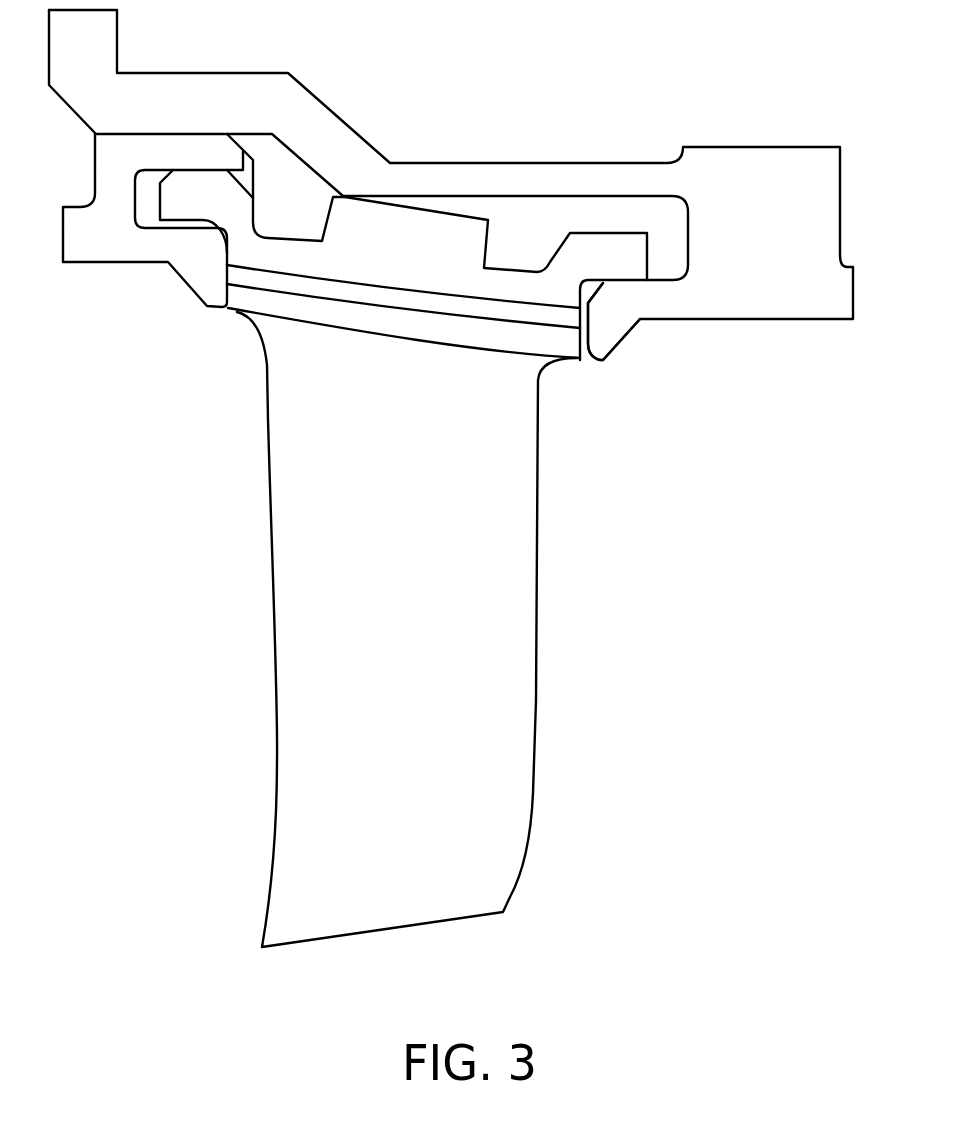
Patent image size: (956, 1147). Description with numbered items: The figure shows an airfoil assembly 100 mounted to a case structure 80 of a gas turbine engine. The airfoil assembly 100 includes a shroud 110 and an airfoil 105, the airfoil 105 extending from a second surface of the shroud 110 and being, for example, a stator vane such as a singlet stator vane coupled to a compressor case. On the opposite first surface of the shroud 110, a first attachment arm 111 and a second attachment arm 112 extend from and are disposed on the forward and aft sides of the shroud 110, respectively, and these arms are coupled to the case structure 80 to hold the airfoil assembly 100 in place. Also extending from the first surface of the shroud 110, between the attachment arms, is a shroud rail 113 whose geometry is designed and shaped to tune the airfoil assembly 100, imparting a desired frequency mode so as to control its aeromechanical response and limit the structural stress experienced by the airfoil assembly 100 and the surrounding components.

The case structure 80 is at (753, 147).
The airfoil assembly 100 is at (164, 381).
The airfoil 105 is at (540, 549).
The shroud 110 is at (578, 354).
The first attachment arm 111 is at (190, 198).
The second attachment arm 112 is at (627, 263).
The shroud rail 113 is at (425, 228).